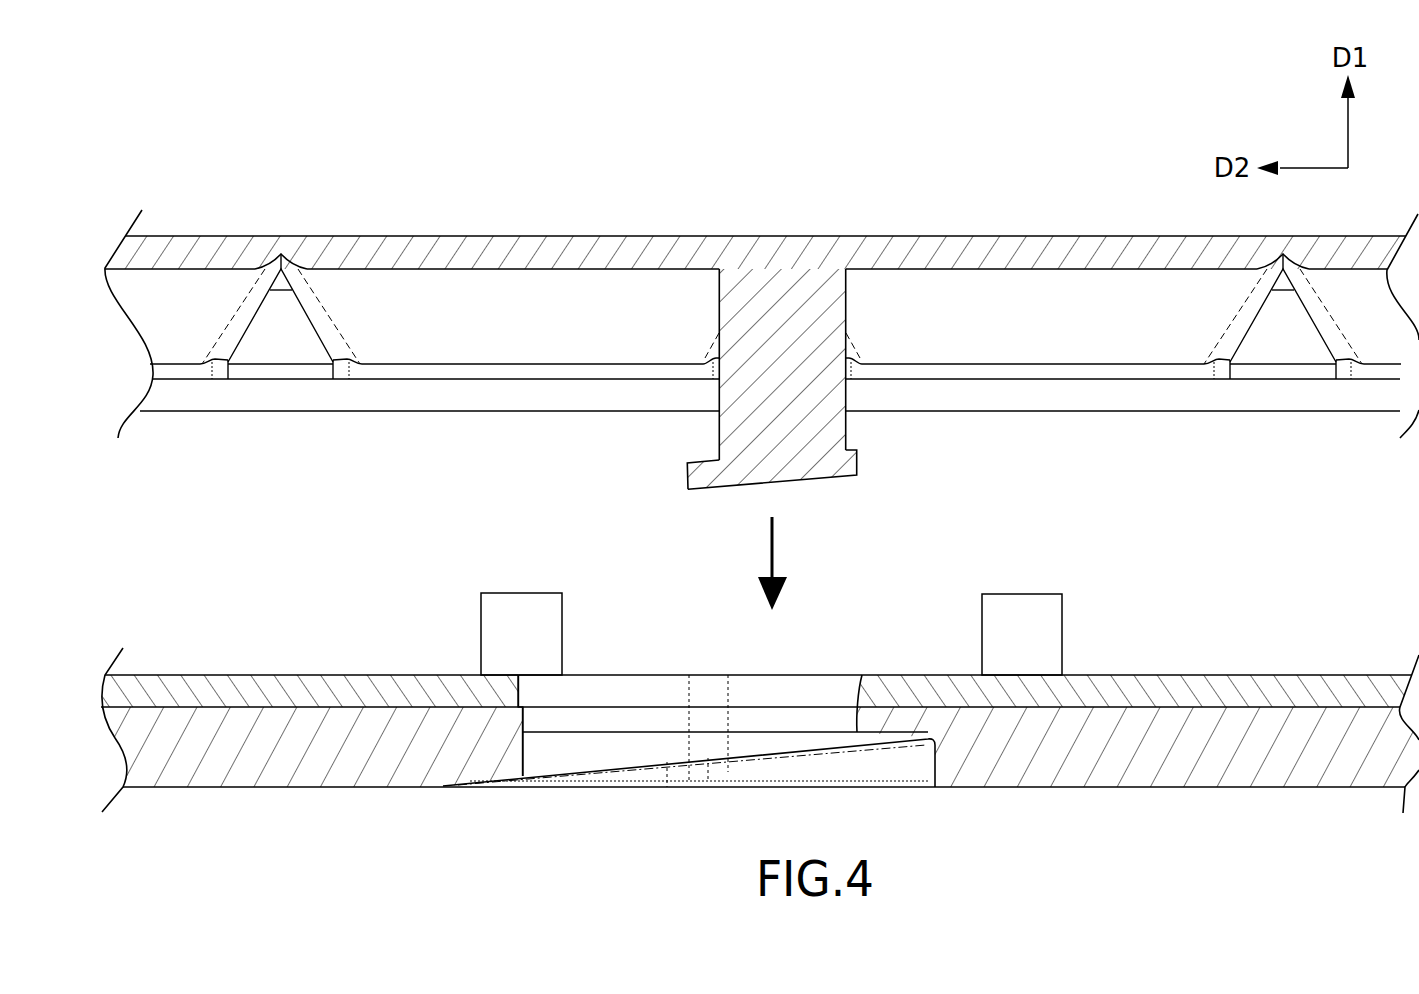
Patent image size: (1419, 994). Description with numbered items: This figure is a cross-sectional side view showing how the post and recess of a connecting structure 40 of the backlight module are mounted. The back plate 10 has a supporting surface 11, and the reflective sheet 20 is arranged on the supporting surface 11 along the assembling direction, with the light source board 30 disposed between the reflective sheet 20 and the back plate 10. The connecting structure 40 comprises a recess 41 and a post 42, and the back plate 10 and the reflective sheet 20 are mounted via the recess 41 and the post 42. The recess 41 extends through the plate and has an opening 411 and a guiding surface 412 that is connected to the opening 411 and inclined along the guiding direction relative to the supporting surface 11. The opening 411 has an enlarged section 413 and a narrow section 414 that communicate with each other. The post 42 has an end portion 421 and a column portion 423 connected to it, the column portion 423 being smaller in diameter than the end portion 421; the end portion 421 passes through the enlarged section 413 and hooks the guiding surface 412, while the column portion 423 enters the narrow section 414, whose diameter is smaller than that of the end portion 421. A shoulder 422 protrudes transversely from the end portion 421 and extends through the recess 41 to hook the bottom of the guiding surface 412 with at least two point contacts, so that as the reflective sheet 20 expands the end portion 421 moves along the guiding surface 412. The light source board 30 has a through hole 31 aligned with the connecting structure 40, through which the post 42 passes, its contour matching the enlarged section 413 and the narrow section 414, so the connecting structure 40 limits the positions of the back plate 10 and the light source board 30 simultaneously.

The back plate 10 is at (267, 800).
The supporting surface 11 is at (243, 707).
The reflective sheet 20 is at (990, 232).
The light source board 30 is at (1137, 689).
The through hole 31 is at (857, 728).
The connecting structure 40 is at (726, 816).
The recess 41 is at (689, 816).
The post 42 is at (753, 351).
The opening 411 is at (520, 727).
The guiding surface 412 is at (640, 763).
The enlarged section 413 is at (753, 717).
The narrow section 414 is at (628, 718).
The end portion 421 is at (813, 482).
The shoulder 422 is at (700, 478).
The column portion 423 is at (803, 295).